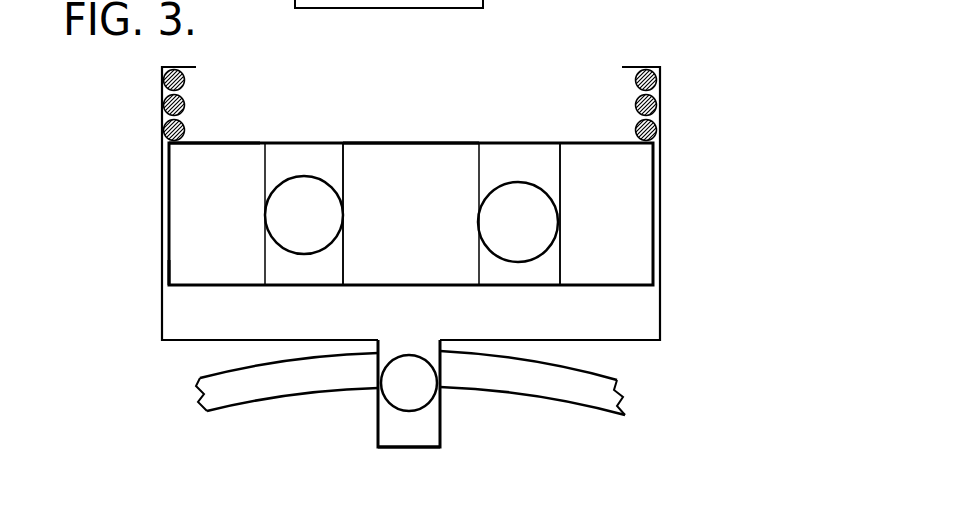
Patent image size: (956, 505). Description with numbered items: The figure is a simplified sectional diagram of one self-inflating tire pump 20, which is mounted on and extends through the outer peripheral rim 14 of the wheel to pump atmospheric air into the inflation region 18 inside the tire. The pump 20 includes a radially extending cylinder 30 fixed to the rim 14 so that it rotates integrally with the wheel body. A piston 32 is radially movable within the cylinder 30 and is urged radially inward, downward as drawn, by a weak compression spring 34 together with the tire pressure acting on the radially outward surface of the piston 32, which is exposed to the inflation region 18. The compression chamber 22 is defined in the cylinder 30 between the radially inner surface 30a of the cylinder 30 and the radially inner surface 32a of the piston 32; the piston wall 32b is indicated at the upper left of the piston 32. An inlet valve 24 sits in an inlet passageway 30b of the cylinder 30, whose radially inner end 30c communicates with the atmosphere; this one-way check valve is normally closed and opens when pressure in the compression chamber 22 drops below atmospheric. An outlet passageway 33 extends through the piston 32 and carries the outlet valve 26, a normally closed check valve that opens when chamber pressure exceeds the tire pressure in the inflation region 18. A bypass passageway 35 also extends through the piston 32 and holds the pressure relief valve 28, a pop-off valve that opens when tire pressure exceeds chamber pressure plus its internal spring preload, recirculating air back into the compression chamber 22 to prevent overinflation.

The outer peripheral rim 14 is at (607, 388).
The inflation region 18 is at (407, 115).
The self-inflating tire pump 20 is at (575, 74).
The compression chamber 22 is at (429, 325).
The inlet valve 24 is at (422, 390).
The outlet valve 26 is at (537, 183).
The pressure relief valve 28 is at (272, 210).
The cylinder 30 is at (662, 297).
The radially inner surface of the cylinder 30a is at (207, 341).
The inlet passageway 30b is at (388, 420).
The radially inner end of the inlet passageway 30c is at (414, 448).
The piston 32 is at (628, 178).
The radially inner surface of the piston 32a is at (169, 287).
The valve block top wall 32b is at (234, 143).
The outlet passageway 33 is at (562, 183).
The compression spring 34 is at (656, 91).
The bypass passageway 35 is at (343, 185).